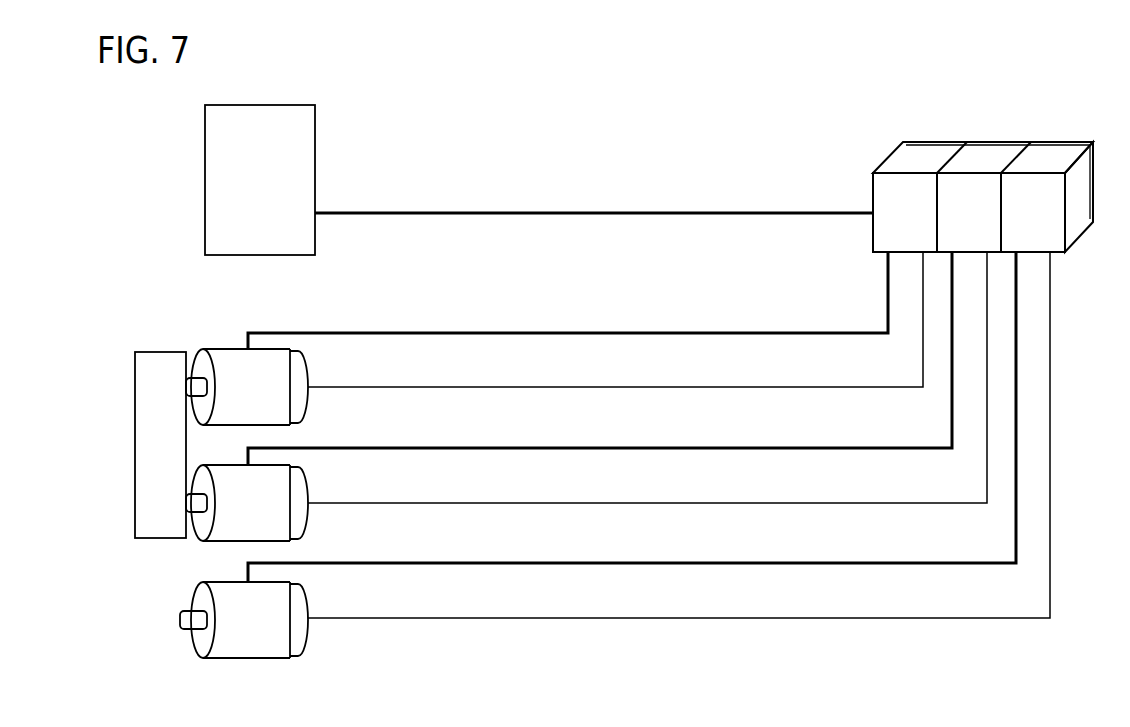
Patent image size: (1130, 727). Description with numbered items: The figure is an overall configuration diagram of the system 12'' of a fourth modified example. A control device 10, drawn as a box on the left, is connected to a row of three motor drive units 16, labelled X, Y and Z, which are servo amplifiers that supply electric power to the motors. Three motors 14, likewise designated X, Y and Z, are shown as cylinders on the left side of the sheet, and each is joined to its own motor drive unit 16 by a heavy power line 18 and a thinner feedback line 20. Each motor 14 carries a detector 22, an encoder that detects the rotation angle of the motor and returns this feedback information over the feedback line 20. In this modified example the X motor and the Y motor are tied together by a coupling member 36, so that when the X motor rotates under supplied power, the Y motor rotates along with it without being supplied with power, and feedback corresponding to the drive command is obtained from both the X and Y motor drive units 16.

The control device 10 is at (314, 145).
The system 12'' is at (450, 57).
The motor 14 is at (227, 357).
The motor drive unit 16 is at (1047, 158).
The power line 18 is at (522, 563).
The feedback line 20 is at (670, 617).
The detector 22 is at (302, 367).
The coupling member 36 is at (144, 369).